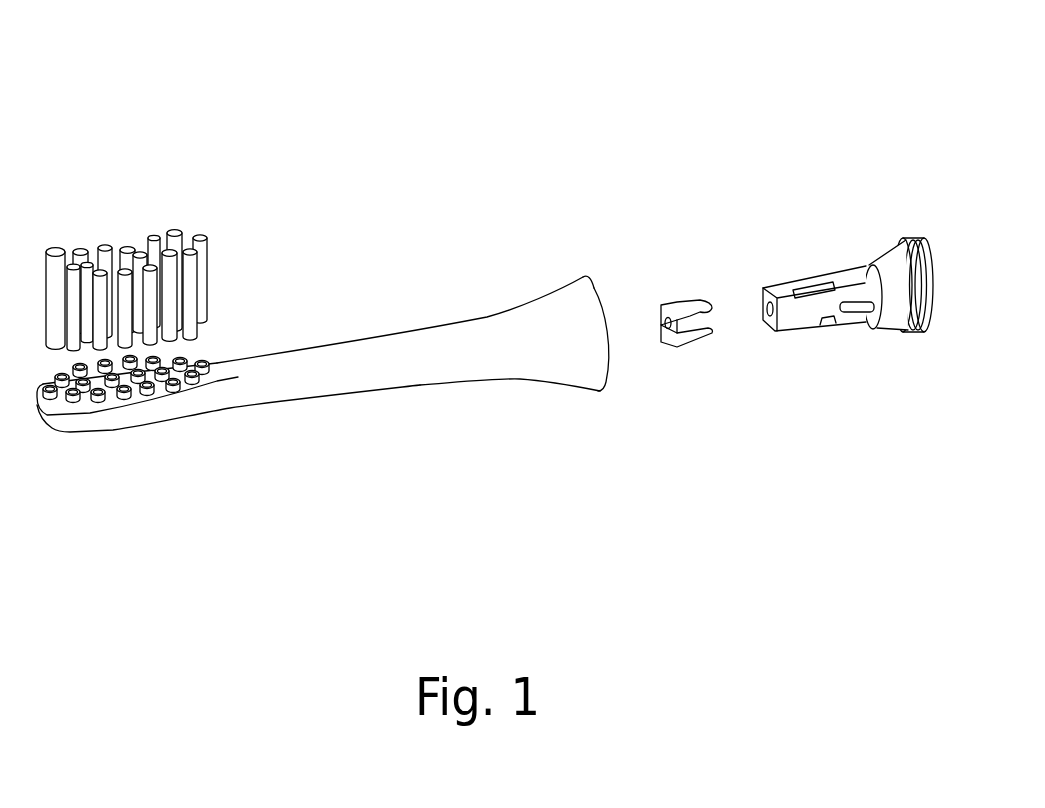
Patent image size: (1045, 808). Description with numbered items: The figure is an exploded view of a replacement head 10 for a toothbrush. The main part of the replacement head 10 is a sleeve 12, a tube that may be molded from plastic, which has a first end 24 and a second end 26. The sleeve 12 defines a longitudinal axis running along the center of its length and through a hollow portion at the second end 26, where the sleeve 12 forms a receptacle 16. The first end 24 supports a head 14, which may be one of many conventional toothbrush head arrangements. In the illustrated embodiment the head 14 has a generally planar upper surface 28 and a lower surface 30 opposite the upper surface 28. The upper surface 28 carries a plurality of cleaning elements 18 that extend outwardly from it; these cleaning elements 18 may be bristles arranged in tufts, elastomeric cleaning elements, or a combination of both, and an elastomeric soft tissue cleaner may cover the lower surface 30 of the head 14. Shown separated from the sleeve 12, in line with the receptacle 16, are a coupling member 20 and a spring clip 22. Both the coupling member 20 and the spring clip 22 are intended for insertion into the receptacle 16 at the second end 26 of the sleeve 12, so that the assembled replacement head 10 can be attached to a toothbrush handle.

The replacement head 10 is at (343, 180).
The sleeve 12 is at (372, 393).
The head 14 is at (112, 413).
The receptacle 16 is at (595, 380).
The cleaning elements 18 is at (53, 248).
The coupling member 20 is at (887, 333).
The spring clip 22 is at (687, 303).
The first end 24 is at (232, 390).
The second end 26 is at (597, 288).
The upper surface 28 is at (97, 400).
The lower surface 30 is at (152, 430).